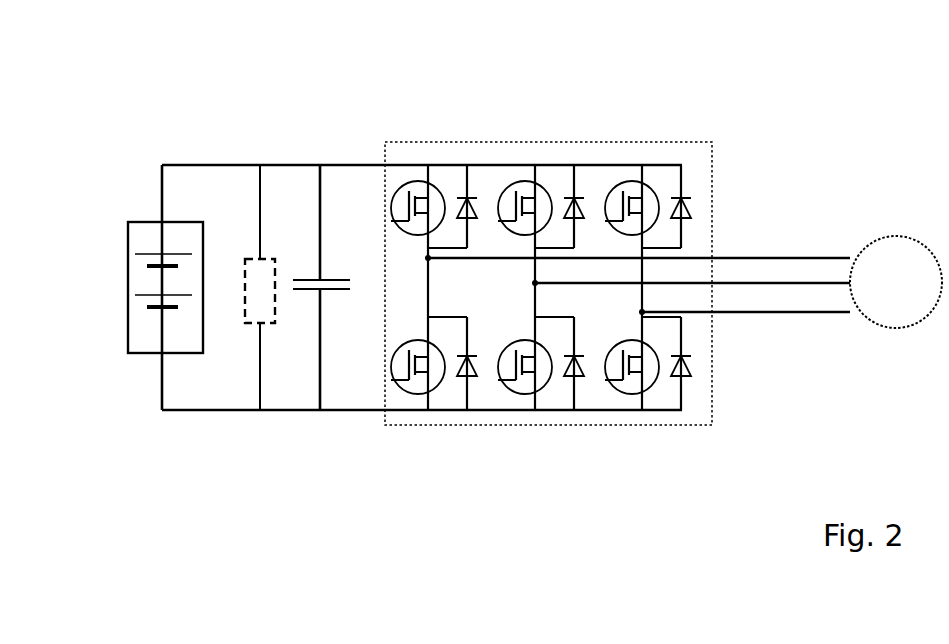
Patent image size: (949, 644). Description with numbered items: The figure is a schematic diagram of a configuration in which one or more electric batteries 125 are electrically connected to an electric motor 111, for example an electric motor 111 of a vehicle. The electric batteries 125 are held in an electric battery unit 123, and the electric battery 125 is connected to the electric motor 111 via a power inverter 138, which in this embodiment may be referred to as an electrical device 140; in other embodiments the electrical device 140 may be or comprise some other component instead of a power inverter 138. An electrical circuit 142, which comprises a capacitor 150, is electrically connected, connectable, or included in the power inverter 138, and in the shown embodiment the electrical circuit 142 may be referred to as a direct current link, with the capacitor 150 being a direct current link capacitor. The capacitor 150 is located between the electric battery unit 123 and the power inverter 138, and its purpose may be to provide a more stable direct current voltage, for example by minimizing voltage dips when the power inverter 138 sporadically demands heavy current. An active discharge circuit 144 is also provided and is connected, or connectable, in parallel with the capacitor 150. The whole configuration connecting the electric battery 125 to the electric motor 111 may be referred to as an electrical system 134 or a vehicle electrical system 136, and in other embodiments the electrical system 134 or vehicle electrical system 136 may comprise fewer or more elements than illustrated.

The electric motor 111 is at (887, 255).
The electric battery unit 123 is at (119, 266).
The electric battery 125 is at (142, 303).
The electrical system 134 is at (560, 224).
The vehicle electrical system 136 is at (663, 224).
The power inverter 138 is at (558, 142).
The electrical device 140 is at (548, 236).
The electrical circuit 142 is at (323, 365).
The active discharge circuit 144 is at (252, 258).
The capacitor 150 is at (333, 278).